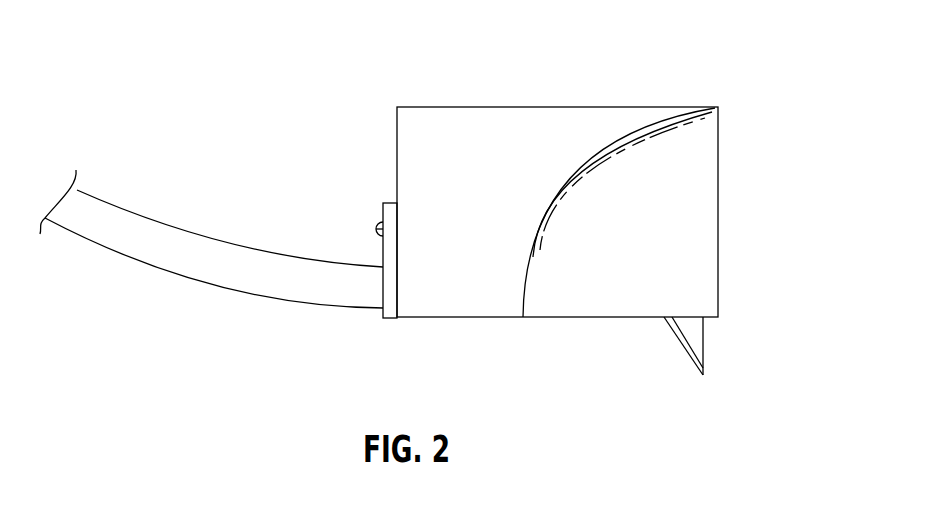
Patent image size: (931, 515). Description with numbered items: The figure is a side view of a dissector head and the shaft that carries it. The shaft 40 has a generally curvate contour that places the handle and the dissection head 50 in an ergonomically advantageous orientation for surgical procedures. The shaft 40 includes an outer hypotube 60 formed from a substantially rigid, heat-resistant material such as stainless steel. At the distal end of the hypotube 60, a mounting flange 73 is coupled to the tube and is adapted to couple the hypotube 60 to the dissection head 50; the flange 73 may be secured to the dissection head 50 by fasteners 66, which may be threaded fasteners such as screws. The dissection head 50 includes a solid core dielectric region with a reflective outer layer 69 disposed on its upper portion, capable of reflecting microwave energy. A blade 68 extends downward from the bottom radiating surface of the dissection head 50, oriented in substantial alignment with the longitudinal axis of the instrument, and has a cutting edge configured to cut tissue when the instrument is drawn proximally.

The shaft 40 is at (126, 281).
The dissection head 50 is at (622, 42).
The outer hypotube 60 is at (275, 294).
The fasteners 66 is at (376, 229).
The blade 68 is at (703, 340).
The reflective outer layer 69 is at (515, 120).
The mounting flange 73 is at (391, 212).